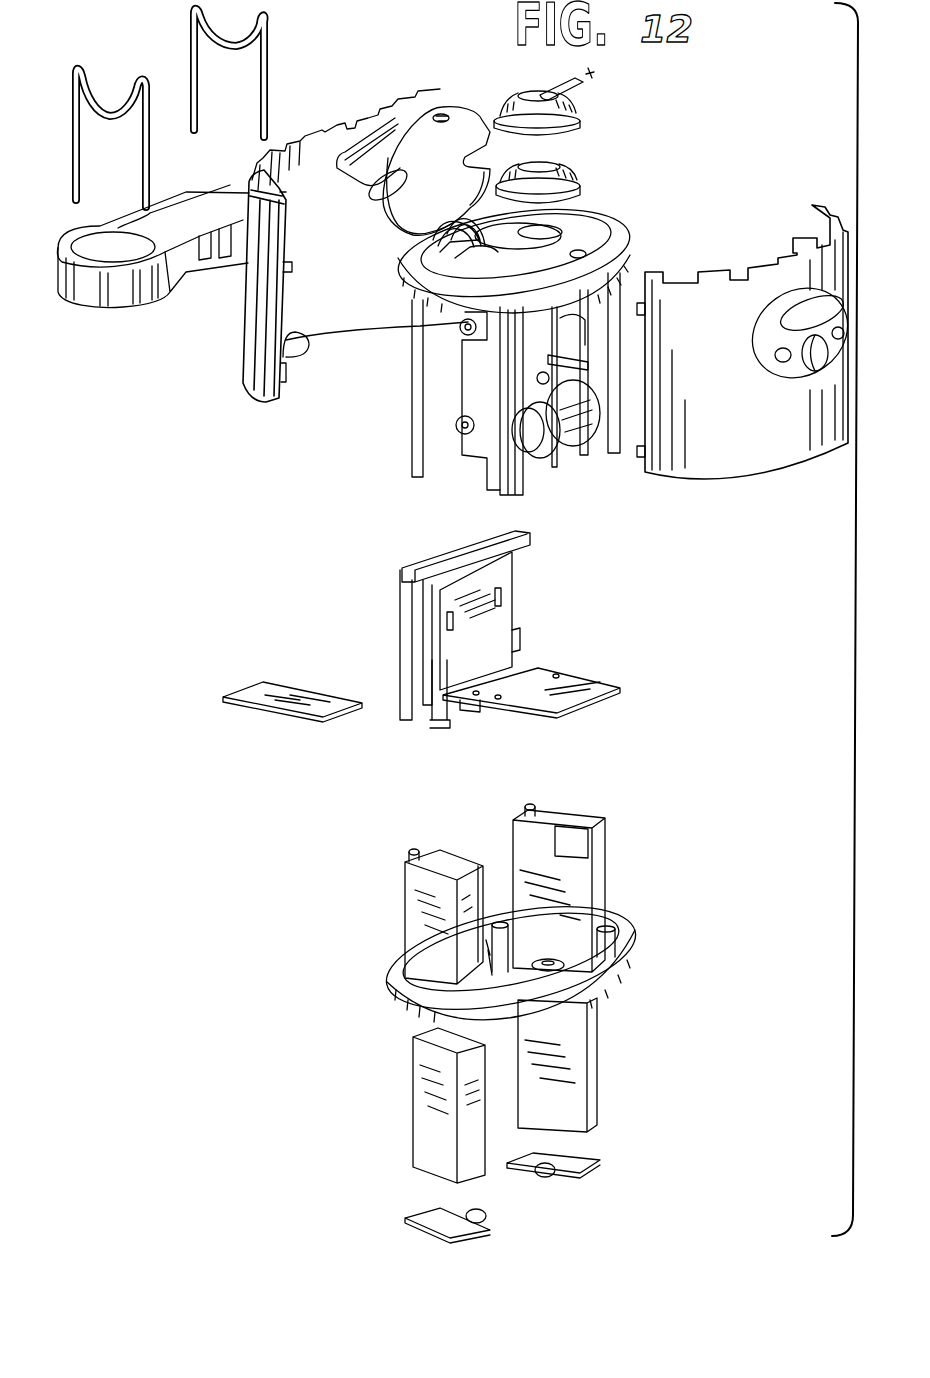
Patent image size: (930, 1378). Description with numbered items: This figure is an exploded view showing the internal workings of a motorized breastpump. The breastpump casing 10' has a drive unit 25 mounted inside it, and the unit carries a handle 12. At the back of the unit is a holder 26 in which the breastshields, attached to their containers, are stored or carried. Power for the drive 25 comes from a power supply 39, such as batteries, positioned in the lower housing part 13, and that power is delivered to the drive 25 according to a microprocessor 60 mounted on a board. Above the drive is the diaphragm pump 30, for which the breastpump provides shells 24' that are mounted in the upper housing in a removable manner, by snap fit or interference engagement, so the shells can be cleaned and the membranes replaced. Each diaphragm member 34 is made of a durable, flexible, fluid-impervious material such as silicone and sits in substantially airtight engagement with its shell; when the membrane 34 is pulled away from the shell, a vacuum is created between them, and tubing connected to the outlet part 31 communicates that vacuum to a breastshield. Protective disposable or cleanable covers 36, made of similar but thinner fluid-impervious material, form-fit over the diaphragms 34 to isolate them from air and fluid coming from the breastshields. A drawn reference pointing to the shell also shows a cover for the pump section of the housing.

The breastpump casing 10' is at (751, 388).
The handle 12 is at (368, 160).
The lower housing part 13 is at (635, 955).
The shells 24' is at (577, 111).
The drive unit 25 is at (575, 484).
The holder 26 is at (108, 297).
The diaphragm pump 30 is at (622, 194).
The outlet part 31 is at (592, 72).
The diaphragm member 34 is at (560, 250).
The covers 36 is at (588, 162).
The power supply 39 is at (420, 1090).
The microprocessor 60 is at (548, 623).